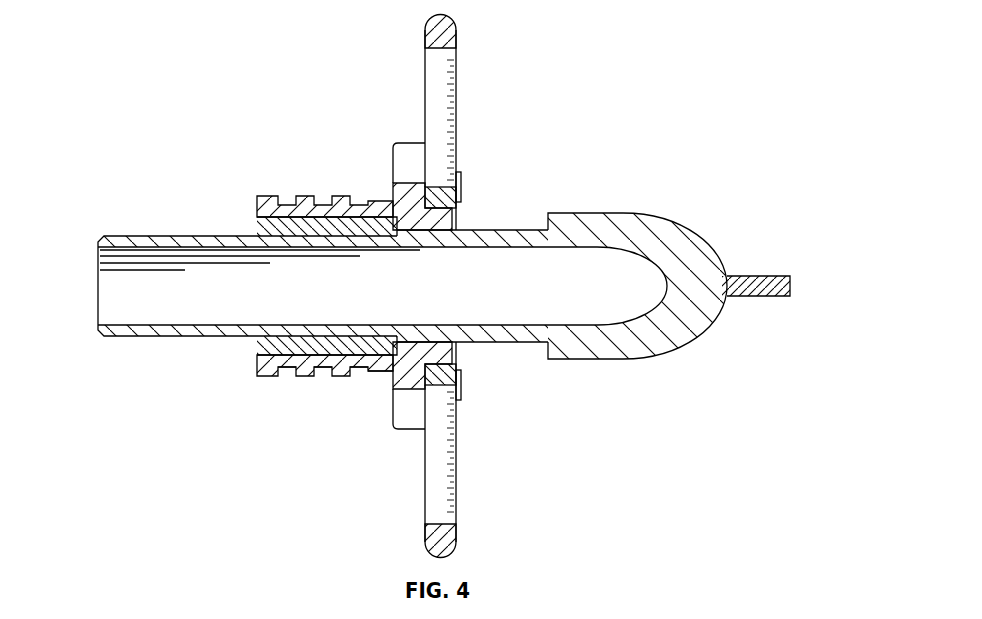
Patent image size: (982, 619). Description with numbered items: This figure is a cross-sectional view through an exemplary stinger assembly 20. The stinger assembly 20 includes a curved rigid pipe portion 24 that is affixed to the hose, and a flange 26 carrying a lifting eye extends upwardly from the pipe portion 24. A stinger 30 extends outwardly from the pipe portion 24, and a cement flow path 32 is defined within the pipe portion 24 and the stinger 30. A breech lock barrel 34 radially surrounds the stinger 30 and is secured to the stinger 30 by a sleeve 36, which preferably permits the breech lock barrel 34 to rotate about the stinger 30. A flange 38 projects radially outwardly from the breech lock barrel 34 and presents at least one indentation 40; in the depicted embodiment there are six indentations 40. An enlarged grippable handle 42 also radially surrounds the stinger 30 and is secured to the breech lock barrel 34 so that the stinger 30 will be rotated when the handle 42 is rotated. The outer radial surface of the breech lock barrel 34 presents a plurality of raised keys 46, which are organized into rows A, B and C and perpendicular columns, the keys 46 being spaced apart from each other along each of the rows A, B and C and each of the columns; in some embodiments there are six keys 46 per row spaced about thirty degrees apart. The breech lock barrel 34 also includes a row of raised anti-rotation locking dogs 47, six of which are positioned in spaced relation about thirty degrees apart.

The stinger assembly 20 is at (606, 60).
The curved rigid pipe portion 24 is at (680, 345).
The flange 26 is at (756, 276).
The stinger 30 is at (170, 236).
The cement flow path 32 is at (477, 324).
The breech lock barrel 34 is at (321, 203).
The sleeve 36 is at (338, 350).
The flange 38 is at (407, 143).
The indentation 40 is at (393, 160).
The enlarged grippable handle 42 is at (457, 37).
The raised keys 46 is at (246, 392).
The anti-rotation locking dogs 47 is at (373, 369).
The row A is at (268, 376).
The row B is at (302, 376).
The row C is at (352, 374).